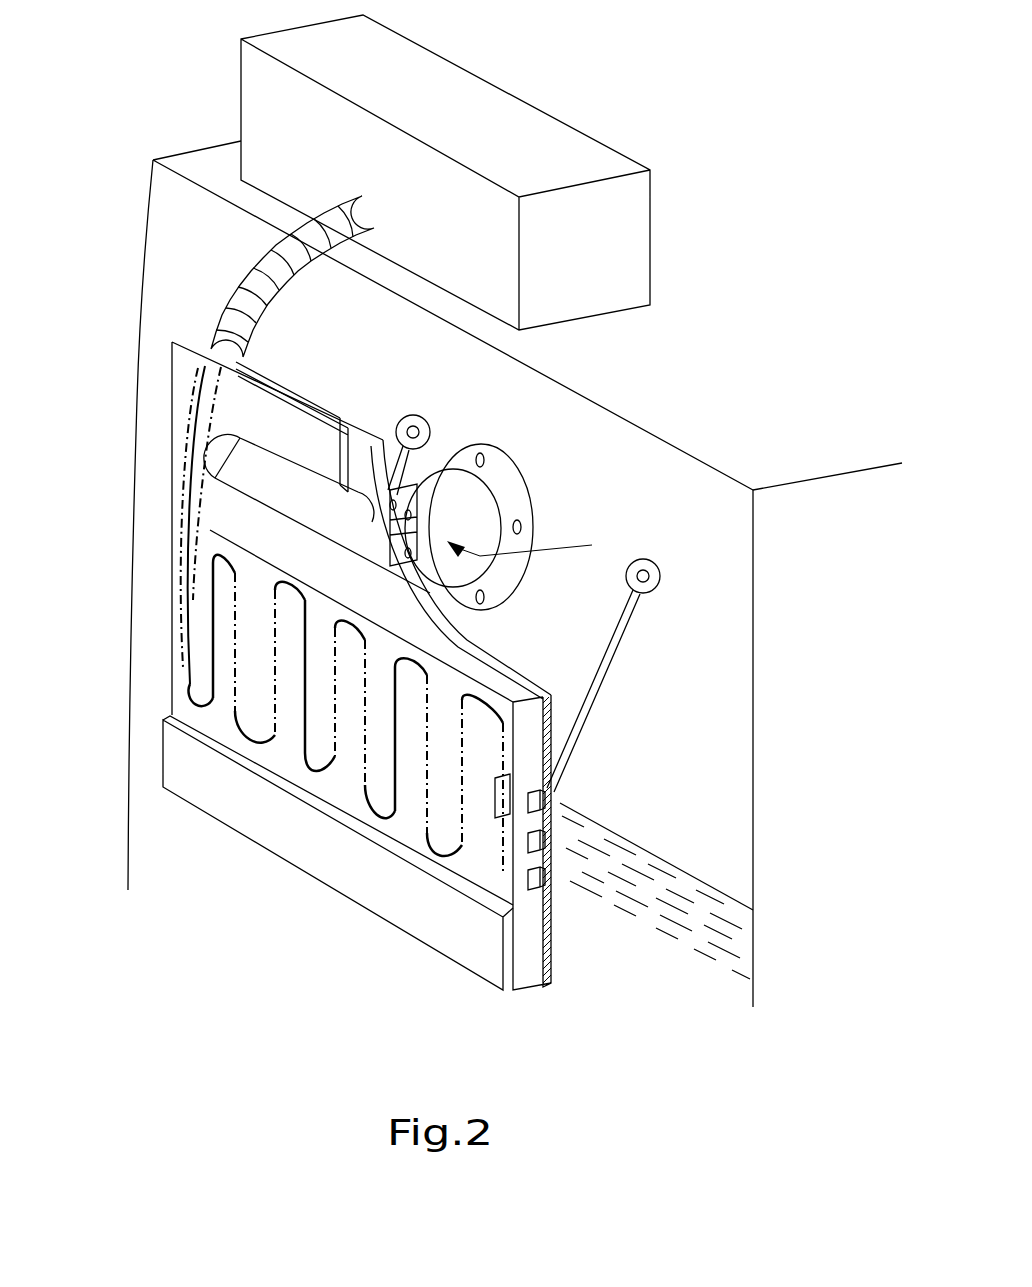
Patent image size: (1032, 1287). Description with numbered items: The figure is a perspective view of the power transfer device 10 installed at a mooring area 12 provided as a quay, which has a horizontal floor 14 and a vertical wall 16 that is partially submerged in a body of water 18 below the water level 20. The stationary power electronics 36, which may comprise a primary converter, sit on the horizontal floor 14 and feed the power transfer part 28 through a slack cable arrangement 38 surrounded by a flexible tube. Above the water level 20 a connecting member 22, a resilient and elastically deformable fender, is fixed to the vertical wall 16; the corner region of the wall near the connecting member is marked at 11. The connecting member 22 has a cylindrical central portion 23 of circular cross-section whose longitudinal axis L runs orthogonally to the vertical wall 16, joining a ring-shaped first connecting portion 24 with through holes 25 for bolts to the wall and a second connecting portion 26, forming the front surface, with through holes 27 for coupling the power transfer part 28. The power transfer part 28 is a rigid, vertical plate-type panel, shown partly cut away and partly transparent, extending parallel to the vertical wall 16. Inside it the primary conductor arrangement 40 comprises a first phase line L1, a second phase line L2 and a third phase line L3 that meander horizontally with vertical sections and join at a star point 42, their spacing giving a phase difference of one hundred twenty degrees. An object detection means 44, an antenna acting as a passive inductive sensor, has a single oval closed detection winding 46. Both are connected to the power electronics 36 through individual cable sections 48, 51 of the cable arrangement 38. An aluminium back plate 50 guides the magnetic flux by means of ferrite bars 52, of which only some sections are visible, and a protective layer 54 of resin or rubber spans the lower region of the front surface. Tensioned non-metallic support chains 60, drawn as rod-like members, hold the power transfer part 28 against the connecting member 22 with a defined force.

The power transfer device 10 is at (97, 163).
The housing corner 11 is at (712, 493).
The mooring area 12 is at (790, 203).
The horizontal floor 14 is at (683, 395).
The vertical wall 16 is at (735, 610).
The body of water 18 is at (747, 958).
The water level 20 is at (713, 887).
The connecting member 22 is at (457, 537).
The central portion 23 is at (538, 541).
The first connecting portion 24 is at (462, 457).
The through holes 25 is at (483, 455).
The second connecting portion 26 is at (417, 517).
The through holes 27 is at (412, 512).
The power transfer part 28 is at (193, 338).
The power electronics 36 is at (612, 240).
The cable arrangement 38 is at (297, 268).
The primary conductor arrangement 40 is at (260, 633).
The star point 42 is at (500, 808).
The object detection means 44 is at (210, 463).
The detection winding 46 is at (222, 490).
The cable section 48 is at (193, 410).
The back plate 50 is at (553, 735).
The cable section 51 is at (273, 382).
The ferrite bars 52 is at (540, 806).
The protective layer 54 is at (378, 893).
The support chains 60 is at (393, 453).
The longitudinal axis L is at (462, 537).
The first phase line L1 is at (238, 690).
The second phase line L2 is at (212, 648).
The third phase line L3 is at (240, 690).